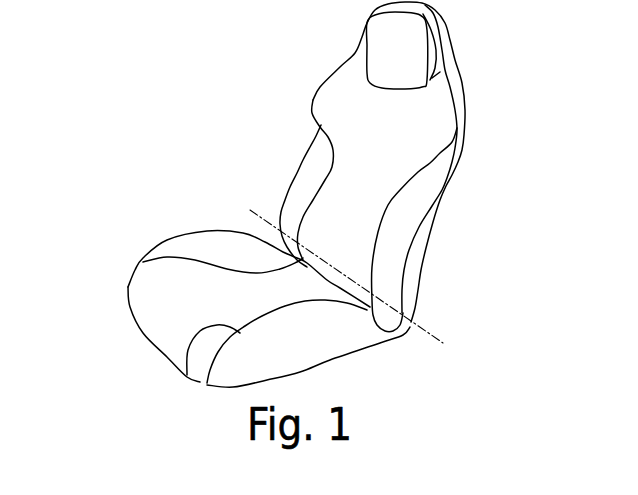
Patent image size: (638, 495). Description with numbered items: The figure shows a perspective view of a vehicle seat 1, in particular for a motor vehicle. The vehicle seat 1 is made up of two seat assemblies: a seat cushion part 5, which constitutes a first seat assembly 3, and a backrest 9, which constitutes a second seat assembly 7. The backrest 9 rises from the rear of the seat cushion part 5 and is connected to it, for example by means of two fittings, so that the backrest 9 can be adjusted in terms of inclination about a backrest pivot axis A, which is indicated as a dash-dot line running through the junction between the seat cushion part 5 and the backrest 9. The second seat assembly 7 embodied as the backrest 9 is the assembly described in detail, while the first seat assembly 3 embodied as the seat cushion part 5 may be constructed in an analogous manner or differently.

The vehicle seat 1 is at (198, 118).
The first seat assembly 3 is at (163, 295).
The seat cushion part 5 is at (269, 309).
The second seat assembly 7 is at (435, 133).
The backrest 9 is at (372, 167).
The backrest pivot axis A is at (433, 332).